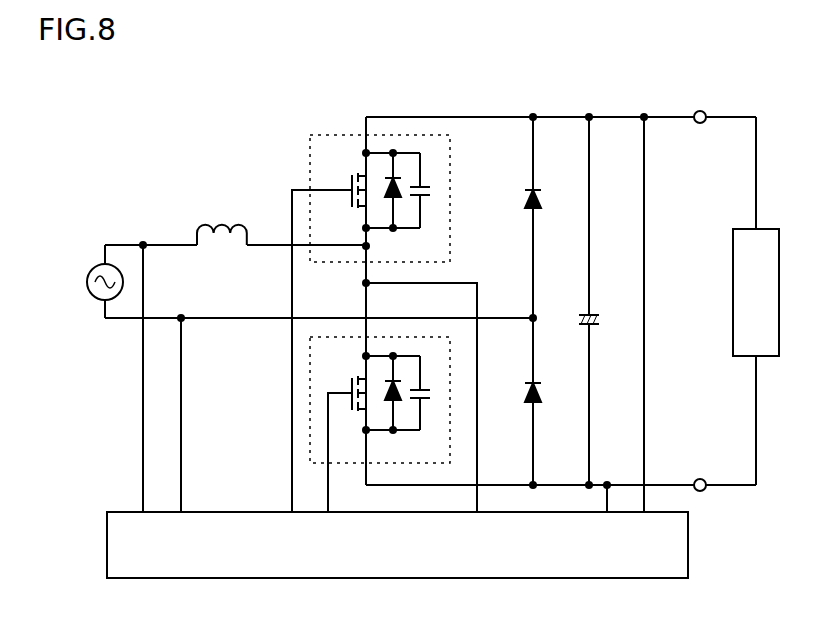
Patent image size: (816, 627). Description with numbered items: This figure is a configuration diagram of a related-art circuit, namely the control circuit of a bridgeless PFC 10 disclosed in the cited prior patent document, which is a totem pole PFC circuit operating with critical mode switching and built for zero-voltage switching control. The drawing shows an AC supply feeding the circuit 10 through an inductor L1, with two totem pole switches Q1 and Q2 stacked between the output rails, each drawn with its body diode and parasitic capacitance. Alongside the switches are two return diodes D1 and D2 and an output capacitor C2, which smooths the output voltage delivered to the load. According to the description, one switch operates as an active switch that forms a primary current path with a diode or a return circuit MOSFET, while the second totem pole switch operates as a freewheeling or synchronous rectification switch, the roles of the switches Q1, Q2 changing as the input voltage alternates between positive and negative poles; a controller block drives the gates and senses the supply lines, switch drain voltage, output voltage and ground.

The control circuit of a bridgeless PFC 10 is at (447, 81).
The first switching element Q1 is at (380, 198).
The second switching element Q2 is at (380, 400).
The first diode D1 is at (546, 199).
The second diode D2 is at (546, 392).
The inductor L1 is at (200, 213).
The output capacitor C2 is at (596, 304).